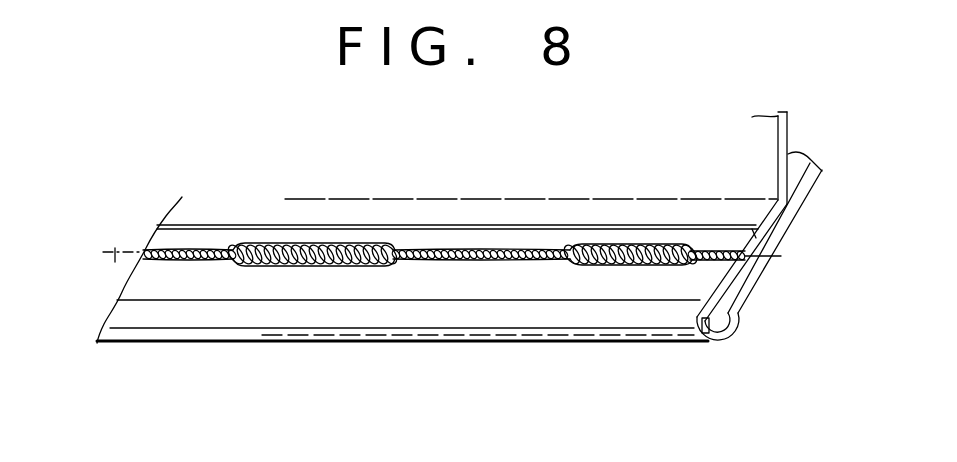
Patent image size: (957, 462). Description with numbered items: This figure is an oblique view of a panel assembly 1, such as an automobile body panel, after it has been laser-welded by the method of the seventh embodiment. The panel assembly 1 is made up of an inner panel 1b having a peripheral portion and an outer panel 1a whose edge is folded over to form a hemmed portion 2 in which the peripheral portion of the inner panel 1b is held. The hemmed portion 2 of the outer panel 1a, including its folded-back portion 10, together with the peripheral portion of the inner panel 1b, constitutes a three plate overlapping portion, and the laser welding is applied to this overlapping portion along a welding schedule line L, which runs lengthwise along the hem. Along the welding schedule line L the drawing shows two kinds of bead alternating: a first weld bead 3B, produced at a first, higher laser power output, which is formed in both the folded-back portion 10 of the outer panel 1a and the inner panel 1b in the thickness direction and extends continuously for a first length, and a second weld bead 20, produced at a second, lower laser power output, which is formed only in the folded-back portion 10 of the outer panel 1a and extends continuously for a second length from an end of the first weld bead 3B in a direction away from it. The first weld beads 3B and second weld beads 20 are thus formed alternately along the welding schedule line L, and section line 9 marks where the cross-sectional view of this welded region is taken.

The panel assembly 1 is at (830, 83).
The outer panel 1a is at (798, 170).
The inner panel 1b is at (783, 158).
The hemmed portion 2 is at (627, 277).
The first weld bead 3B is at (295, 247).
The section line 9- 9 is at (378, 396).
The folded-back portion 10 is at (700, 268).
The second weld bead 20 is at (435, 248).
The welding schedule line L is at (115, 262).